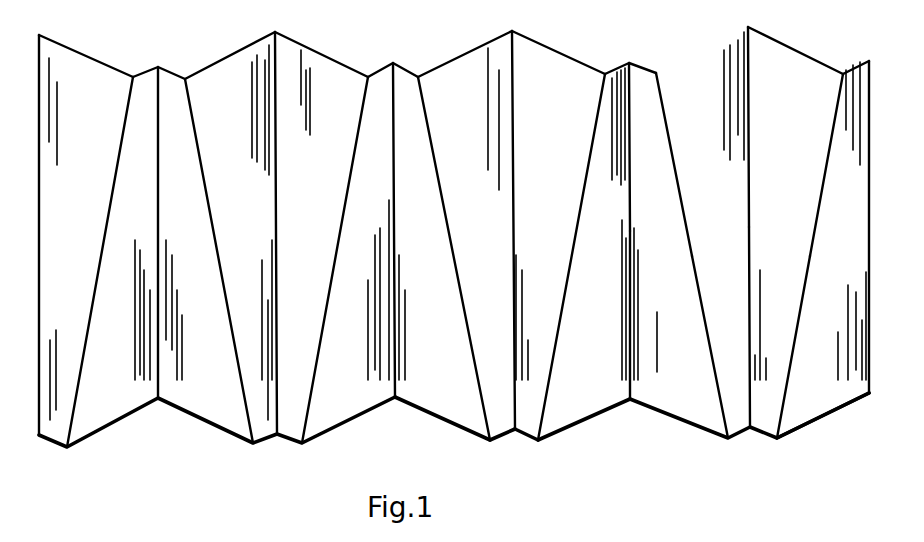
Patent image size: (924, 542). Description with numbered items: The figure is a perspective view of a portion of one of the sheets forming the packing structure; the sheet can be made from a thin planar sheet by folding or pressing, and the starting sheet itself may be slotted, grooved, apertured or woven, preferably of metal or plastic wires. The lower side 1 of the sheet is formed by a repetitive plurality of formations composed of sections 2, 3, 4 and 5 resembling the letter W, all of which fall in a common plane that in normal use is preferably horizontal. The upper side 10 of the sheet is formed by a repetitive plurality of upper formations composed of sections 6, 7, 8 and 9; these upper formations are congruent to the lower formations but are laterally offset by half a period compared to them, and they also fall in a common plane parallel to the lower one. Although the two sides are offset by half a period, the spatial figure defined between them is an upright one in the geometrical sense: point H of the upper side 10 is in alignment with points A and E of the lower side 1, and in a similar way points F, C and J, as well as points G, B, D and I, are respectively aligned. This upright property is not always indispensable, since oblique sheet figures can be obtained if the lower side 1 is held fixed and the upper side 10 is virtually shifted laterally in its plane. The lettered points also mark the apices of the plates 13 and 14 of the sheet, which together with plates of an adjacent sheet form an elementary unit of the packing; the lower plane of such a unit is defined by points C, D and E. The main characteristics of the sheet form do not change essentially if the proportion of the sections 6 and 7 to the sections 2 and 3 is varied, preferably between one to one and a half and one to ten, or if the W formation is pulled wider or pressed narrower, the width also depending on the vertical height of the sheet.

The lower side 1 is at (276, 450).
The section 2 is at (430, 417).
The section 3 is at (500, 440).
The section 4 is at (527, 440).
The section 5 is at (595, 418).
The section 6 is at (403, 72).
The section 7 is at (445, 62).
The section 8 is at (533, 40).
The section 9 is at (608, 70).
The upper side 10 is at (302, 32).
The plate 13 is at (783, 65).
The plate 14 is at (850, 248).
The point A is at (633, 402).
The point B is at (725, 443).
The point C is at (750, 432).
The point D is at (778, 442).
The point E is at (872, 397).
The point F is at (629, 62).
The point G is at (657, 72).
The point H is at (750, 28).
The point I is at (843, 72).
The point J is at (872, 62).